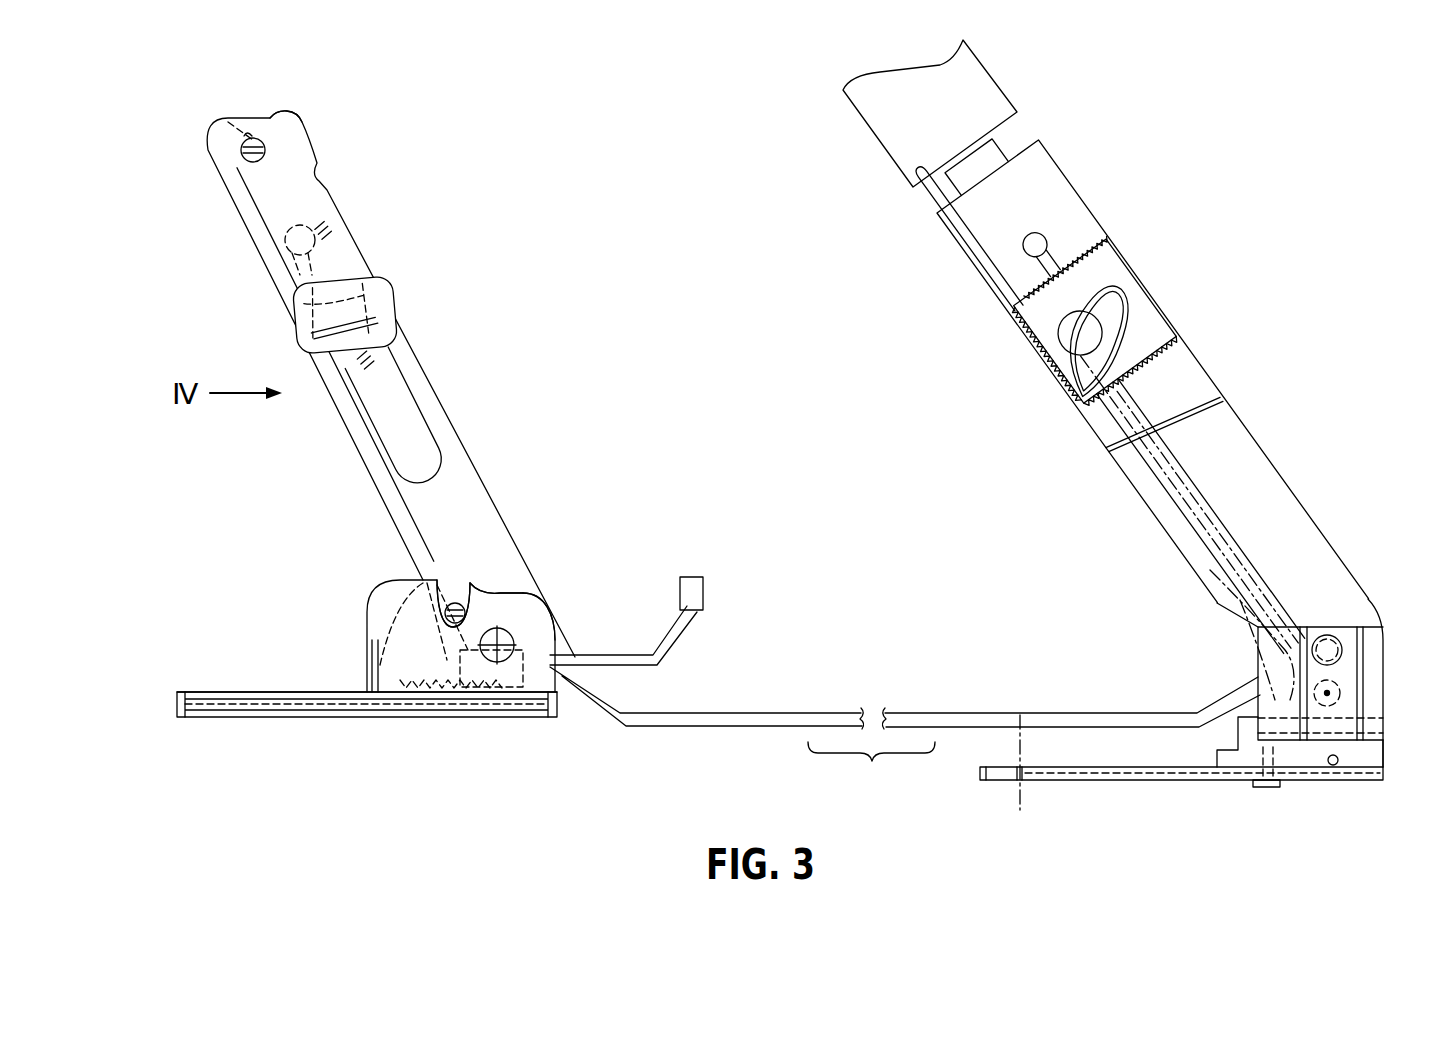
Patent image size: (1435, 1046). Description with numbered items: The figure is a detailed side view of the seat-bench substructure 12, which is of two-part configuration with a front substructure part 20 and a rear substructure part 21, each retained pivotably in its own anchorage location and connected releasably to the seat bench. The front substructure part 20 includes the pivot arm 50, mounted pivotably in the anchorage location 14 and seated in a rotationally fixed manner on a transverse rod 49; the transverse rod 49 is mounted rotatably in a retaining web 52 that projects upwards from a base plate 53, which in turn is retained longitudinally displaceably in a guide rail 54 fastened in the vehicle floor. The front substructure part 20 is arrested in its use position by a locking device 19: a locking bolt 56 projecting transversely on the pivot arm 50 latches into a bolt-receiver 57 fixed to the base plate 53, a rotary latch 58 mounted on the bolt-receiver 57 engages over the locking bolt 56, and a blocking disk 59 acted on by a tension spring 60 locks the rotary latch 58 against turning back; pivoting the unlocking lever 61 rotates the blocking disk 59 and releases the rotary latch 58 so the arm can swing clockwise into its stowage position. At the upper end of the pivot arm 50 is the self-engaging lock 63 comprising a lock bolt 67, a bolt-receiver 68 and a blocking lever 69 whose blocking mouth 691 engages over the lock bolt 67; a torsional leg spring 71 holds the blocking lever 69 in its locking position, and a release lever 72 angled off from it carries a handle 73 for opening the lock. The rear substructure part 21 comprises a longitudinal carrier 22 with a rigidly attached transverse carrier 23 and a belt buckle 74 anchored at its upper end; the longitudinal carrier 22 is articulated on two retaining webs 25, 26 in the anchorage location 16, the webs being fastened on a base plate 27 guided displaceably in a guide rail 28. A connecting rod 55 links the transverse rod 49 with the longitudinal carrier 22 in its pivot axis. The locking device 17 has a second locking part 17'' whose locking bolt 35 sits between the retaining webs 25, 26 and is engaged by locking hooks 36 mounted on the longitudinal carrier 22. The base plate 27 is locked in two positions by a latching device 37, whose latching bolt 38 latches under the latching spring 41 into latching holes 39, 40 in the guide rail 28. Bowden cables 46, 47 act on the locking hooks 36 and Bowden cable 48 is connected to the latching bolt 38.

The seat-bench substructure 12 is at (618, 216).
The anchorage location 14 is at (456, 716).
The anchorage location 16 is at (1367, 787).
The locking device 17 is at (949, 238).
The second locking part 17'' is at (1352, 792).
The locking device 19 is at (647, 654).
The front substructure part 20 is at (333, 418).
The rear substructure part 21 is at (1213, 373).
The longitudinal carrier 22 is at (1235, 430).
The transverse carrier 23 is at (1154, 330).
The retaining web 25 is at (1357, 713).
The retaining web 26 is at (1310, 692).
The base plate 27 is at (1373, 755).
The guide rail 28 is at (1118, 765).
The locking bolt 35 is at (1260, 668).
The locking hook 36 is at (1358, 663).
The latching device 37 is at (1247, 782).
The latching bolt 38 is at (1267, 786).
The latching hole 39 is at (1024, 755).
The latching hole 40 is at (1287, 778).
The latching spring 41 is at (1257, 727).
The Bowden cable 46 is at (1213, 533).
The Bowden cable 47 is at (1215, 568).
The Bowden cable 48 is at (1050, 323).
The transverse rod 49 is at (505, 662).
The pivot arm 50 is at (446, 440).
The retaining web 52 is at (382, 595).
The base plate 53 is at (226, 690).
The guide rail 54 is at (305, 690).
The connecting rod 55 is at (790, 713).
The locking bolt 56 is at (465, 608).
The bolt-receiver 57 is at (483, 610).
The rotary latch 58 is at (451, 588).
The blocking disk 59 is at (527, 614).
The tension spring 60 is at (412, 690).
The unlocking lever 61 is at (683, 632).
The self-engaging lock 63 is at (226, 119).
The lock bolt 67 is at (267, 162).
The bolt-receiver 68 is at (264, 128).
The blocking lever 69 is at (302, 202).
The torsional leg spring 71 is at (297, 263).
The release lever 72 is at (355, 310).
The handle 73 is at (380, 338).
The belt buckle 74 is at (946, 121).
The blocking mouth 691 is at (243, 135).